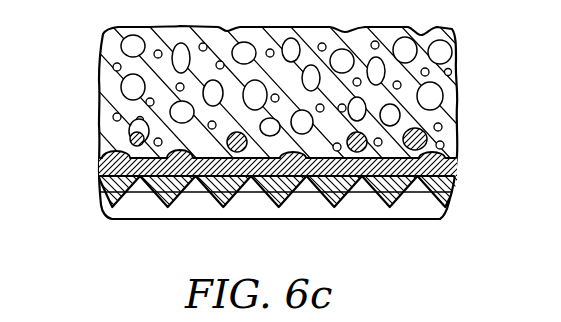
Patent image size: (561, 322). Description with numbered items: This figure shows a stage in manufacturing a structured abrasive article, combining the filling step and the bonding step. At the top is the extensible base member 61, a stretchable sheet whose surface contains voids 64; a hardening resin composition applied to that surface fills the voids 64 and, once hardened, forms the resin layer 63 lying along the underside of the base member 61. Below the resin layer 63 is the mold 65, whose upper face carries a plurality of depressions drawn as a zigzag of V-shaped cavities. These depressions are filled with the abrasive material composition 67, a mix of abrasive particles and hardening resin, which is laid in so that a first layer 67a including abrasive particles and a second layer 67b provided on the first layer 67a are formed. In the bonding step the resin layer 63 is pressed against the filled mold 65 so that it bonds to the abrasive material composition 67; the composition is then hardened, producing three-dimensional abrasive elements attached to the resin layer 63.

The extensible base member 61 is at (446, 107).
The resin layer 63 is at (455, 163).
The voids 64 is at (106, 143).
The mold 65 is at (445, 217).
The abrasive material composition 67 is at (277, 233).
The first layer 67a is at (387, 190).
The second layer 67b is at (366, 178).